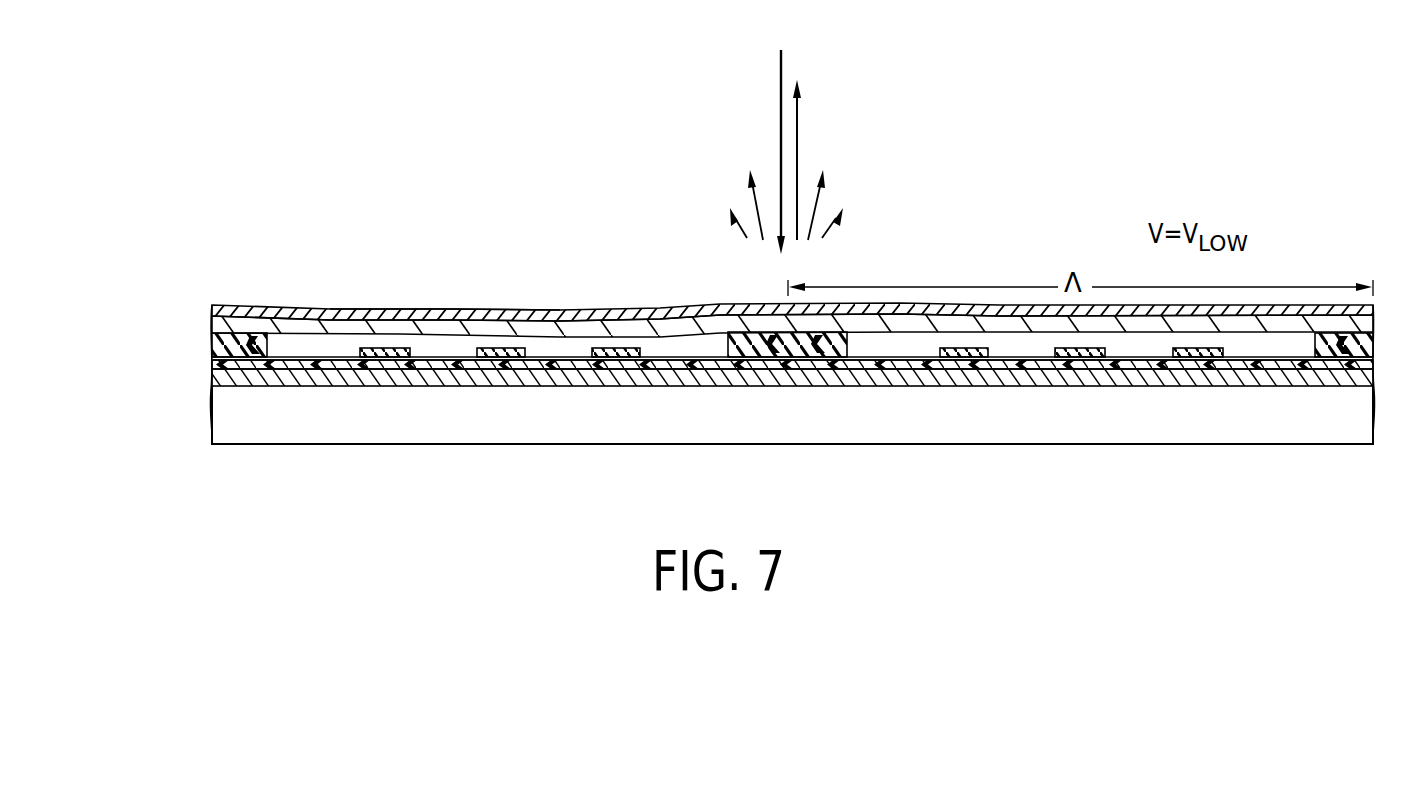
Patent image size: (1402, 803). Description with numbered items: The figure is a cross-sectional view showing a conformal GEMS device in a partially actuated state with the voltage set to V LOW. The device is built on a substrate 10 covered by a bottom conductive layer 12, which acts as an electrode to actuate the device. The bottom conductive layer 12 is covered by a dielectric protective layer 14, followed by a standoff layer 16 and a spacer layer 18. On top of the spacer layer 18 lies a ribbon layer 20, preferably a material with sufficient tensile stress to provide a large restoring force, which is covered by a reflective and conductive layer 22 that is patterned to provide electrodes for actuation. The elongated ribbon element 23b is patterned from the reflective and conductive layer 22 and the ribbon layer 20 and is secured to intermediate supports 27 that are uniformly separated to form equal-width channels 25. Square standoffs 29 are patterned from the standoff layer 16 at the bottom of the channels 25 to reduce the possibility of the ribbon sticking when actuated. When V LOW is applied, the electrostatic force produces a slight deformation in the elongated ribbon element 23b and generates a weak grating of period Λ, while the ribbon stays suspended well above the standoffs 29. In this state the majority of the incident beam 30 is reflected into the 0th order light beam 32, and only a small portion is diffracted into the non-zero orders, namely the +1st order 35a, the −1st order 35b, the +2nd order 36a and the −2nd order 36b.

The substrate 10 is at (250, 435).
The bottom conductive layer 12 is at (214, 376).
The dielectric protective layer 14 is at (213, 356).
The standoff layer 16 is at (213, 363).
The spacer layer 18 is at (213, 343).
The ribbon layer 20 is at (215, 323).
The reflective and conductive layer 22 is at (214, 305).
The elongated ribbon element 23b is at (410, 315).
The channels 25 is at (687, 338).
The intermediate supports 27 is at (791, 352).
The square standoffs 29 is at (385, 356).
The incident beam 30 is at (781, 103).
The 0th order light beam 32 is at (800, 125).
The +1st order diffracted beam 35a is at (827, 183).
The −1st order diffracted beam 35b is at (752, 190).
The +2nd order diffracted beam 36a is at (835, 220).
The −2nd order diffracted beam 36b is at (746, 235).